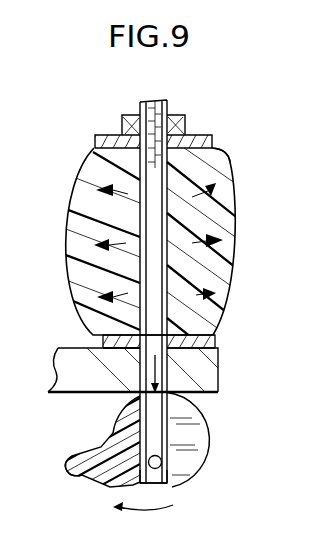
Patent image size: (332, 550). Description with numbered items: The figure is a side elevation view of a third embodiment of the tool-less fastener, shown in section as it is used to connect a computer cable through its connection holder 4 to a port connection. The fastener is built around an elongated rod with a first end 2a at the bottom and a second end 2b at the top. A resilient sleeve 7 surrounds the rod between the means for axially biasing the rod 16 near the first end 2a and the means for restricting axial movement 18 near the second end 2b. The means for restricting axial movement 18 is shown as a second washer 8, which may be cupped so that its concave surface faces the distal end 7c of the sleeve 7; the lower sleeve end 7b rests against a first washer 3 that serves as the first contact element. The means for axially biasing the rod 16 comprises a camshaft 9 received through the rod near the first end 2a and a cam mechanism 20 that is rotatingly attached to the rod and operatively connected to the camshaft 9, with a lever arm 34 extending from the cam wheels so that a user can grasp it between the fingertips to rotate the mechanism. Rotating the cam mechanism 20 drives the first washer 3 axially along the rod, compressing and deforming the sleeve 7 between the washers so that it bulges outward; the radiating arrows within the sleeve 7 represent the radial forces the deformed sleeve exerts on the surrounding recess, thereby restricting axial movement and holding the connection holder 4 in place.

The first end 2a is at (163, 484).
The second end 2b is at (160, 100).
The first washer 3 is at (103, 345).
The connection holder 4 is at (219, 377).
The resilient sleeve 7 is at (235, 228).
The sleeve end 7b is at (216, 338).
The distal end 7c is at (226, 152).
The second washer 8 is at (97, 141).
The camshaft 9 is at (162, 462).
The means for axially biasing the rod 16 is at (243, 398).
The means for restricting axial movement 18 is at (248, 109).
The cam mechanism 20 is at (107, 437).
The lever arm 34 is at (77, 472).